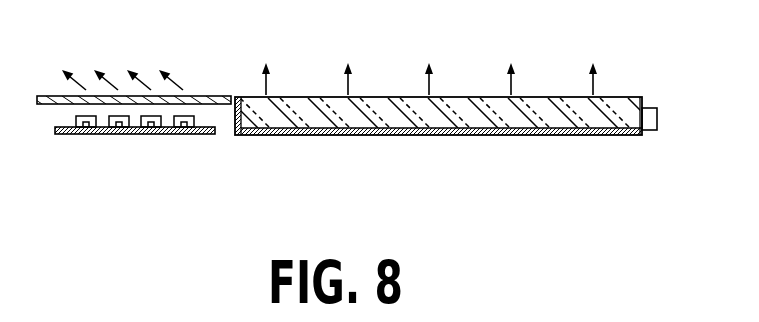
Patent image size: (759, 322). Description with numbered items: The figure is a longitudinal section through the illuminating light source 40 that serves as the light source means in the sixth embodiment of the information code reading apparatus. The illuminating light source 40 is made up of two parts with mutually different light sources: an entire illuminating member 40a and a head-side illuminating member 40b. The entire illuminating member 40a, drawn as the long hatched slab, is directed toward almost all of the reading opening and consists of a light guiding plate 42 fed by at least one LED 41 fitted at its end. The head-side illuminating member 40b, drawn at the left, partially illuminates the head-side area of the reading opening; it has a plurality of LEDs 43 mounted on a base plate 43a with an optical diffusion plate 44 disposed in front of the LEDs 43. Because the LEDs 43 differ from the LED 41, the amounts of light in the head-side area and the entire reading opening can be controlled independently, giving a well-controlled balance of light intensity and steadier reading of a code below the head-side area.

The illuminating light source 40 is at (470, 107).
The entire illuminating member 40a is at (468, 82).
The head-side illuminating member 40b is at (205, 80).
The LED 41 is at (657, 118).
The light guiding plate 42 is at (522, 124).
The LEDs 43 is at (87, 135).
The base plate 43a is at (200, 135).
The optical diffusion plate 44 is at (52, 95).